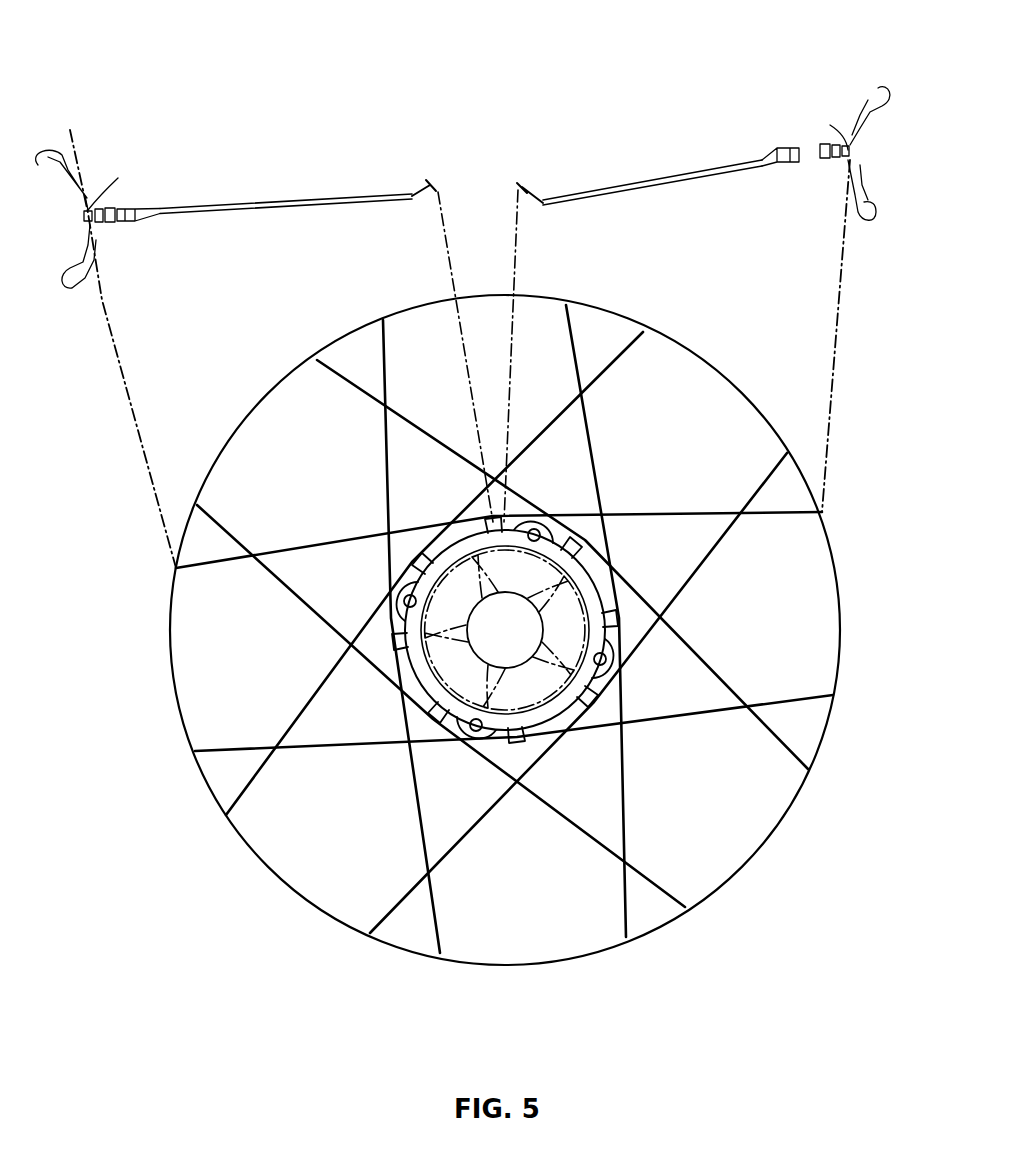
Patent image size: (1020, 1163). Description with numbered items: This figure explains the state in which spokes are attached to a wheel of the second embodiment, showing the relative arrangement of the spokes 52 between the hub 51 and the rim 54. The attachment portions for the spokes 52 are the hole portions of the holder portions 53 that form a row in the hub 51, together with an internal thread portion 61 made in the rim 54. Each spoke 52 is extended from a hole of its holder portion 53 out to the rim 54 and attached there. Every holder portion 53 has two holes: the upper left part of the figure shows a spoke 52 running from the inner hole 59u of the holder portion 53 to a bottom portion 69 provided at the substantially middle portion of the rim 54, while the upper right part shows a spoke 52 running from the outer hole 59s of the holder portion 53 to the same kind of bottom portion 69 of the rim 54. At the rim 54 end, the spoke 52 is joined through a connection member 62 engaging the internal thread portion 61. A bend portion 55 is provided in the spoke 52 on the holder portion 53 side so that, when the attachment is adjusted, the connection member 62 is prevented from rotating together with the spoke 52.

The hub 51 is at (300, 360).
The spoke 52 is at (268, 197).
The holder portion 53 is at (510, 522).
The rim 54 is at (110, 235).
The bend portion 55 is at (409, 188).
The outer hole 59s is at (485, 525).
The inner hole 59u is at (535, 505).
The internal thread portion 61 is at (80, 162).
The connection member 62 is at (150, 208).
The bottom portion 69 is at (118, 178).